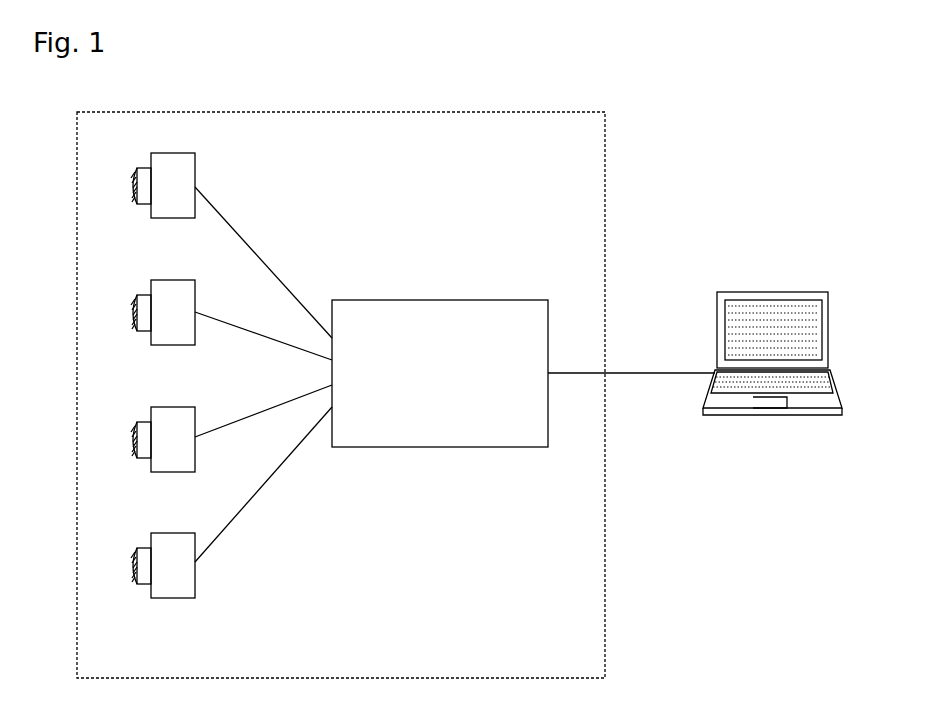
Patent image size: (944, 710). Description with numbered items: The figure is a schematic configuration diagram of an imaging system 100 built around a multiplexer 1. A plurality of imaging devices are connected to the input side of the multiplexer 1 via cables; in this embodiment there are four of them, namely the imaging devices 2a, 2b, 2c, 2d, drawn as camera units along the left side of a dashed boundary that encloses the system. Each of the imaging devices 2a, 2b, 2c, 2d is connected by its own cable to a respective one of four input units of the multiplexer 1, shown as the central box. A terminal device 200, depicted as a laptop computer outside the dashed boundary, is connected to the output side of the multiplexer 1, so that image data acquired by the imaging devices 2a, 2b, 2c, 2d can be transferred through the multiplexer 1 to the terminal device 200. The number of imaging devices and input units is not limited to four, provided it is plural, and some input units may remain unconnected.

The imaging system 100 is at (619, 185).
The multiplexer 1 is at (437, 300).
The imaging device 2a is at (175, 218).
The imaging device 2b is at (175, 345).
The imaging device 2c is at (175, 472).
The imaging device 2d is at (175, 598).
The terminal device 200 is at (803, 292).